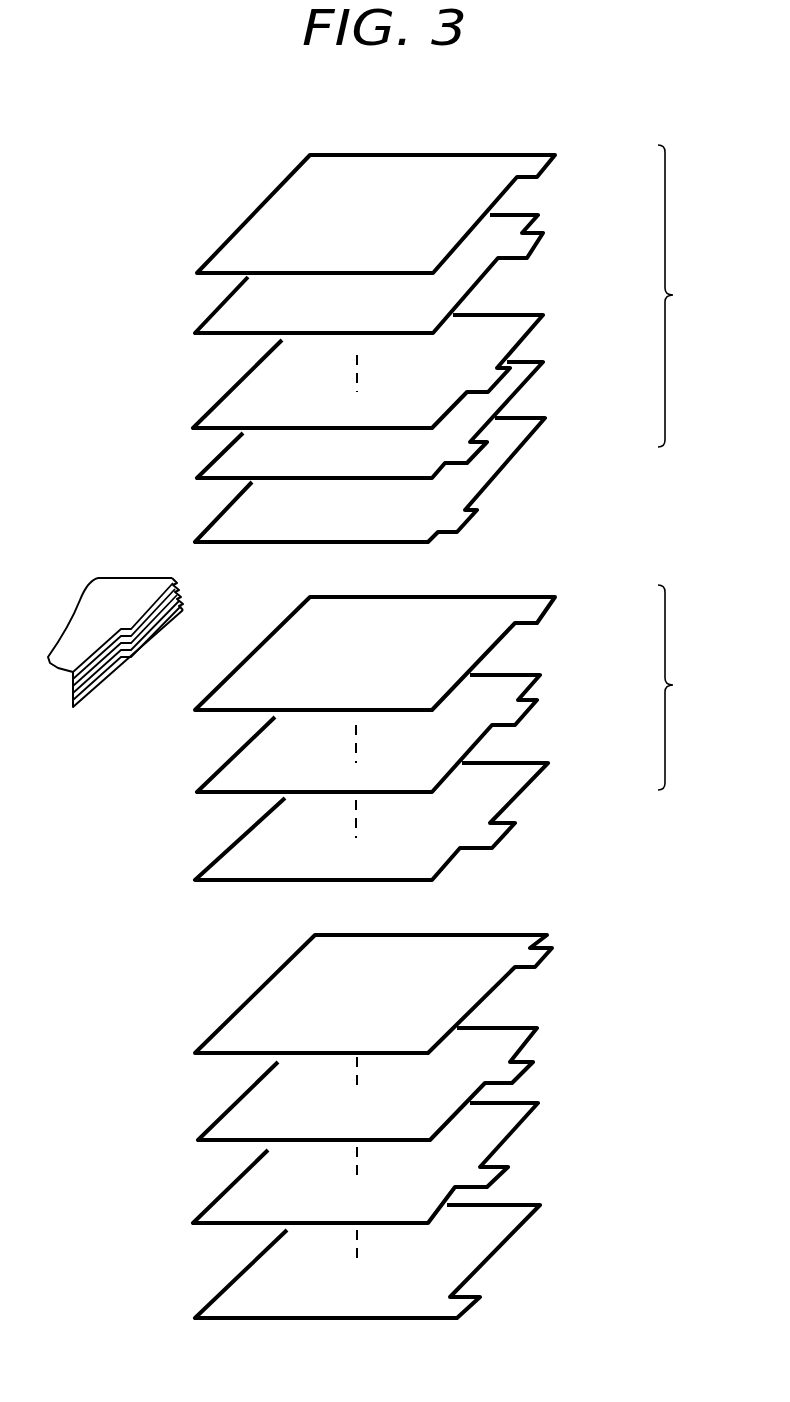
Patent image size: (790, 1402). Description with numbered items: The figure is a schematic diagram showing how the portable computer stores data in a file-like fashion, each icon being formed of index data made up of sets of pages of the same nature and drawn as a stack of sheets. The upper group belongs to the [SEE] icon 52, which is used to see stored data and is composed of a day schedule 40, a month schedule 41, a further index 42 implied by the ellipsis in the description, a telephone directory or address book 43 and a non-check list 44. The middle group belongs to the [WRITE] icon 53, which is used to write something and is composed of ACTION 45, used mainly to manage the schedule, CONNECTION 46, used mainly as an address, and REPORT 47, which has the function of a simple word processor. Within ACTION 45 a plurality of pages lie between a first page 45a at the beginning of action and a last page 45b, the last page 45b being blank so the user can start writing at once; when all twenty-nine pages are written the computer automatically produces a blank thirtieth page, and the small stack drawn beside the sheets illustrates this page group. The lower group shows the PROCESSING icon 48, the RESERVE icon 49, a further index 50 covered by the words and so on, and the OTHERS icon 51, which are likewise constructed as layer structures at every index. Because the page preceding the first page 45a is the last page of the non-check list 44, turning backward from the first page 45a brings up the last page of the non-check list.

The day schedule 40 is at (548, 158).
The month schedule 41 is at (546, 236).
The third laminated sheet 42 is at (545, 322).
The telephone directory (address book) 43 is at (546, 367).
The non-check list 44 is at (546, 422).
The ACTION 45 is at (545, 600).
The first page of action 45a is at (123, 593).
The last page of action 45b is at (112, 674).
The CONNECTION 46 is at (542, 687).
The REPORT 47 is at (543, 777).
The PROCESSING icon 48 is at (553, 950).
The RESERVE icon 49 is at (540, 1040).
The eleventh laminated sheet 50 is at (540, 1117).
The OTHERS icon 51 is at (540, 1222).
The [SEE] icon 52 is at (686, 296).
The [WRITE] icon 53 is at (686, 687).